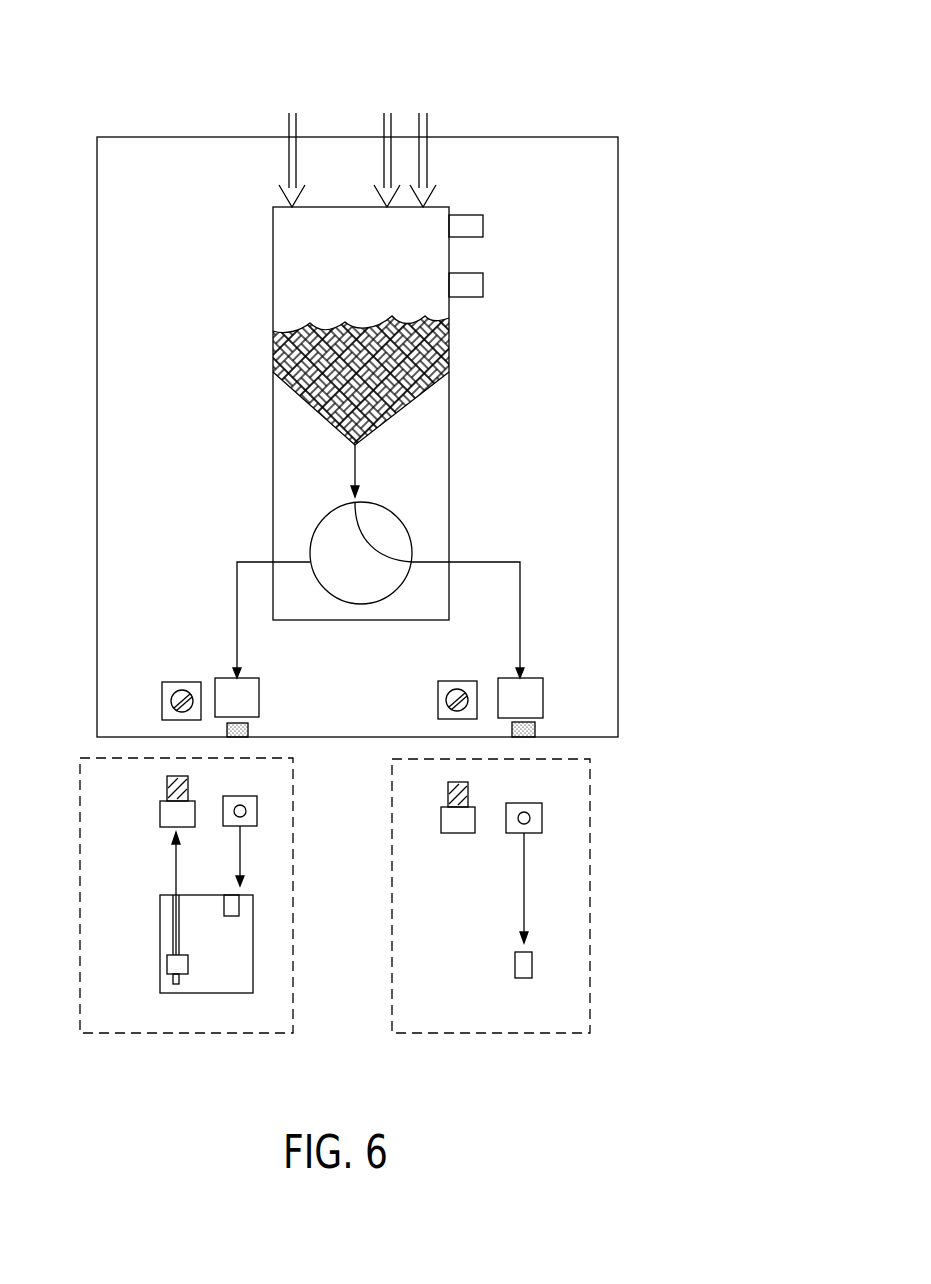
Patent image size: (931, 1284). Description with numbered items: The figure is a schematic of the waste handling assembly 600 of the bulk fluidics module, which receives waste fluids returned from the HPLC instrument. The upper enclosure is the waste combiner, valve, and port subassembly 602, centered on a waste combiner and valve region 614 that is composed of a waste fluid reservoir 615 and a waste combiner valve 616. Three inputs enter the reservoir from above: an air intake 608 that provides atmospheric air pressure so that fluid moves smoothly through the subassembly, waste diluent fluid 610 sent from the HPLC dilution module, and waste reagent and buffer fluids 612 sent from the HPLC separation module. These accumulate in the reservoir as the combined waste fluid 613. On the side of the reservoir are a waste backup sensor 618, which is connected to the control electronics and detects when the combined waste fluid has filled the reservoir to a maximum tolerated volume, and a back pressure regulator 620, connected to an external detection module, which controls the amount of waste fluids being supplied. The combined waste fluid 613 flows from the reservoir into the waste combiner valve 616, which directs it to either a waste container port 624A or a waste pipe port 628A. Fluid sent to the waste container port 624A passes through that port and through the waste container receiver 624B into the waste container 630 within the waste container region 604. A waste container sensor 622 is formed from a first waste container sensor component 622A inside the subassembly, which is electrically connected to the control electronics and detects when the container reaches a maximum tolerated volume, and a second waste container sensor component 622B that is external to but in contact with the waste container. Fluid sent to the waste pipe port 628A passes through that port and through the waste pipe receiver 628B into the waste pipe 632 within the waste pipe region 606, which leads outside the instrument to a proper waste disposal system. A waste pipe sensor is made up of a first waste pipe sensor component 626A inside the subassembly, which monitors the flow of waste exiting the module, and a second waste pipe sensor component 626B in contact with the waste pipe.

The waste handling assembly 600 is at (575, 70).
The waste combiner, valve, and port subassembly 602 is at (97, 325).
The waste container region 604 is at (80, 895).
The waste pipe region 606 is at (590, 877).
The air intake 608 is at (291, 113).
The waste diluent fluid 610 is at (385, 113).
The waste reagent and buffer fluids 612 is at (423, 113).
The combined waste fluid 613 is at (445, 350).
The waste combiner and valve region 614 is at (273, 408).
The waste fluid reservoir 615 is at (405, 408).
The waste combiner valve 616 is at (318, 525).
The waste backup sensor 618 is at (484, 225).
The back pressure regulator 620 is at (484, 285).
The waste container sensor 622 is at (167, 966).
The first waste container sensor component 622A is at (172, 682).
The second waste container sensor component 622B is at (160, 815).
The waste container port 624A is at (260, 697).
The waste container receiver 624B is at (250, 826).
The first waste pipe sensor component 626A is at (438, 698).
The second waste pipe sensor component 626B is at (456, 833).
The waste pipe port 628A is at (540, 678).
The waste pipe receiver 628B is at (533, 833).
The waste container 630 is at (160, 920).
The waste pipe 632 is at (515, 965).